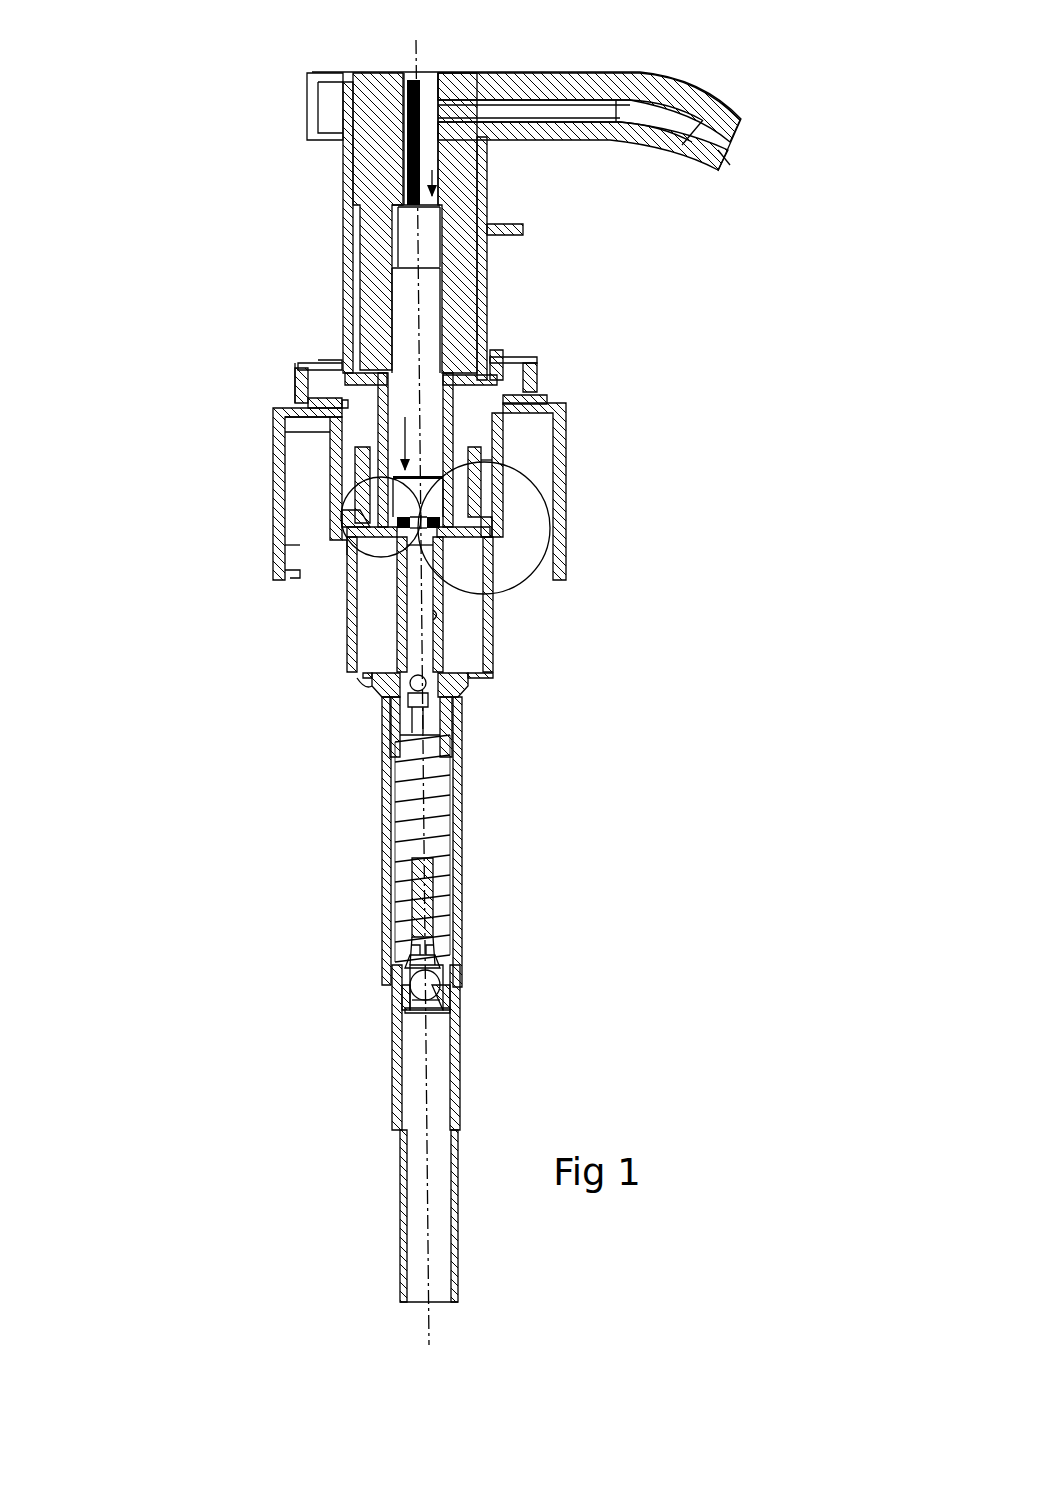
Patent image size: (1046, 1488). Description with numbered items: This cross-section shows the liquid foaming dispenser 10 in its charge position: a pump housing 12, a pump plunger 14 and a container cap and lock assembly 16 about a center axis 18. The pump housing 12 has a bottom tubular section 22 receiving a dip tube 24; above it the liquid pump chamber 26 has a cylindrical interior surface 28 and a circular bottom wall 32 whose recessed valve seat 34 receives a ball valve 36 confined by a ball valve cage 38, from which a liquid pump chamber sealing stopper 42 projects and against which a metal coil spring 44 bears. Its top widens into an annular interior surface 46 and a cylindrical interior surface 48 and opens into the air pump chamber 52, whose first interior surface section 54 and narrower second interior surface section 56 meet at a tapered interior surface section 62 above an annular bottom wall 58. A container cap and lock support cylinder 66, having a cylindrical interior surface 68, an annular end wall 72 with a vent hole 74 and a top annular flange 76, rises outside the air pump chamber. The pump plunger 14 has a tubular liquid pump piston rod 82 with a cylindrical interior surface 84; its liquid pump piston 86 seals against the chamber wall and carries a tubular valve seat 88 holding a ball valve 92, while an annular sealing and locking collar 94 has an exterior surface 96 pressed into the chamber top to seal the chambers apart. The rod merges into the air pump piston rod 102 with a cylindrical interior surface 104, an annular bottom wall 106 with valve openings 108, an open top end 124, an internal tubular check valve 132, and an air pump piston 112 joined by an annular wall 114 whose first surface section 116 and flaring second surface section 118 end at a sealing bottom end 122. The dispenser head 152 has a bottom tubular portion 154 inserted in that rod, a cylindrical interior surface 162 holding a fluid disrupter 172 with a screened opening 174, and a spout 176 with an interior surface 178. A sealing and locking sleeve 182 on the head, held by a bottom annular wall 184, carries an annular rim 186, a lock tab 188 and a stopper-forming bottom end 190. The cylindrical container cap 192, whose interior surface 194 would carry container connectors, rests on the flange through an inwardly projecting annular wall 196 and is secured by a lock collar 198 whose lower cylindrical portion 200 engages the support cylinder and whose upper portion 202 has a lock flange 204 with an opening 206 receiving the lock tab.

The dispensing pump 10 is at (700, 84).
The pump body 12 is at (380, 852).
The piston 14 is at (396, 641).
The actuator head 16 is at (529, 201).
The longitudinal axis 18 is at (425, 48).
The dip tube adapter 22 is at (392, 1082).
The dip tube 24 is at (403, 1195).
The cylinder 26 is at (384, 796).
The cylinder wall 28 is at (396, 825).
The inlet valve seat 32 is at (405, 970).
The inlet valve 34 is at (418, 996).
The valve ball 36 is at (412, 984).
The valve cage 38 is at (410, 956).
The piston plug 42 is at (411, 891).
The return spring 44 is at (398, 789).
The outlet valve housing 46 is at (455, 690).
The outlet valve seat 48 is at (455, 666).
The housing wall 52 is at (355, 666).
The piston seal 54 is at (345, 520).
The upper housing 56 is at (355, 626).
The flange 58 is at (373, 688).
The sealing lip 62 is at (345, 556).
The collar 66 is at (272, 447).
The collar inner wall 68 is at (345, 436).
The collar skirt 72 is at (300, 545).
The outer sleeve 74 is at (556, 537).
The collar top wall 76 is at (332, 415).
The piston rod 82 is at (445, 613).
The passage 84 is at (436, 628).
The spring seat 86 is at (455, 735).
The outlet valve 88 is at (430, 688).
The valve ball 92 is at (440, 660).
The valve stem 94 is at (398, 706).
The flange lip 96 is at (360, 684).
The sleeve 102 is at (492, 366).
The ring 104 is at (540, 407).
The valve body 106 is at (445, 496).
The valve disc 108 is at (395, 514).
The sealing lip 112 is at (495, 471).
The inner wall 114 is at (507, 443).
The annular gap 116 is at (503, 470).
The seal 118 is at (470, 520).
The detail region 122 is at (545, 560).
The guide sleeve 124 is at (462, 368).
The cap ring 132 is at (313, 380).
The top plate 152 is at (463, 72).
The guide 154 is at (368, 402).
The piston stem 162 is at (440, 365).
The outlet channel 172 is at (440, 222).
The discharge passage 174 is at (433, 176).
The nozzle 176 is at (722, 108).
The nozzle outlet 178 is at (722, 152).
The head lip 182 is at (345, 155).
The head side wall 184 is at (352, 250).
The guide wall 186 is at (348, 370).
The lug 188 is at (524, 230).
The channel 190 is at (498, 382).
The locking ring 192 is at (286, 431).
The snap hook 194 is at (293, 578).
The ring flange 196 is at (300, 406).
The sleeve 198 is at (297, 400).
The web 200 is at (300, 481).
The groove 202 is at (542, 400).
The rib 204 is at (527, 368).
The cap ring 206 is at (304, 356).